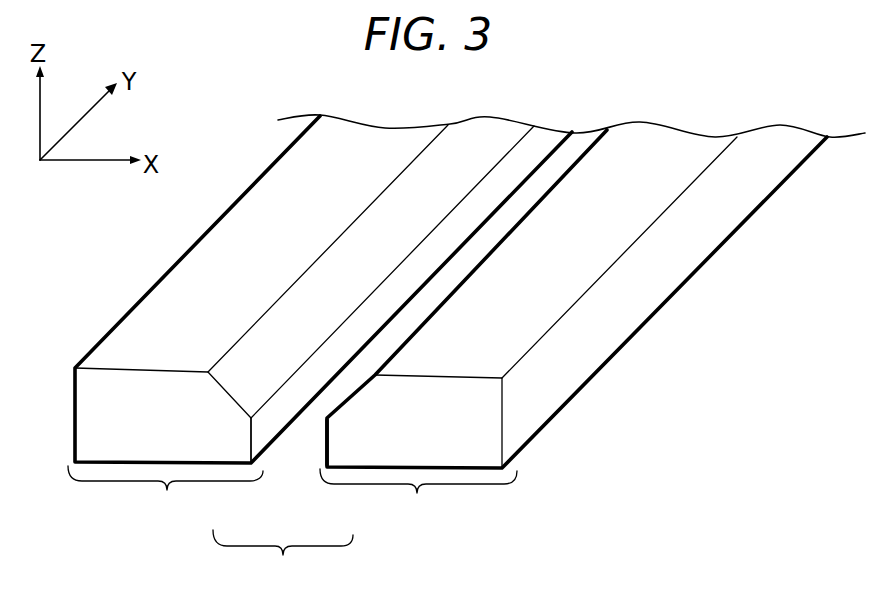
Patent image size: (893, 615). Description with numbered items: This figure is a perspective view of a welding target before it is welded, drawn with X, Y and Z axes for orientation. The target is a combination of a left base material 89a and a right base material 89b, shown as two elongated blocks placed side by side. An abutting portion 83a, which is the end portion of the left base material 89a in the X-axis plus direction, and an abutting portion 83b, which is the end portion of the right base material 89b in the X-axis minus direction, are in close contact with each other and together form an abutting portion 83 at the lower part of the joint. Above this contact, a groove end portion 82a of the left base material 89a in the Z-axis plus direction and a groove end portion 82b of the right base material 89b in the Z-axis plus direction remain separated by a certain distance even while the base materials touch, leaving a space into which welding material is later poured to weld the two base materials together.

The groove end portion 82a is at (243, 333).
The groove end portion 82b is at (407, 330).
The abutting portion 83 is at (283, 561).
The abutting portion 83a is at (252, 440).
The abutting portion 83b is at (327, 445).
The left base material 89a is at (165, 497).
The right base material 89b is at (418, 501).